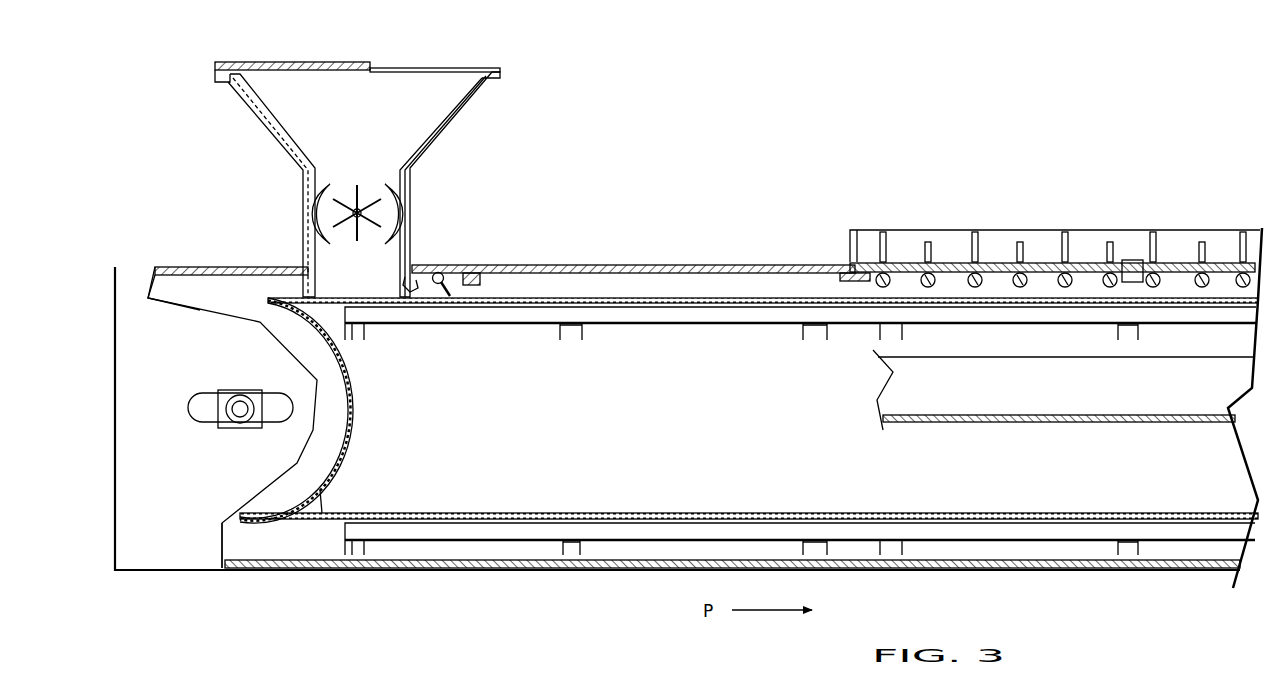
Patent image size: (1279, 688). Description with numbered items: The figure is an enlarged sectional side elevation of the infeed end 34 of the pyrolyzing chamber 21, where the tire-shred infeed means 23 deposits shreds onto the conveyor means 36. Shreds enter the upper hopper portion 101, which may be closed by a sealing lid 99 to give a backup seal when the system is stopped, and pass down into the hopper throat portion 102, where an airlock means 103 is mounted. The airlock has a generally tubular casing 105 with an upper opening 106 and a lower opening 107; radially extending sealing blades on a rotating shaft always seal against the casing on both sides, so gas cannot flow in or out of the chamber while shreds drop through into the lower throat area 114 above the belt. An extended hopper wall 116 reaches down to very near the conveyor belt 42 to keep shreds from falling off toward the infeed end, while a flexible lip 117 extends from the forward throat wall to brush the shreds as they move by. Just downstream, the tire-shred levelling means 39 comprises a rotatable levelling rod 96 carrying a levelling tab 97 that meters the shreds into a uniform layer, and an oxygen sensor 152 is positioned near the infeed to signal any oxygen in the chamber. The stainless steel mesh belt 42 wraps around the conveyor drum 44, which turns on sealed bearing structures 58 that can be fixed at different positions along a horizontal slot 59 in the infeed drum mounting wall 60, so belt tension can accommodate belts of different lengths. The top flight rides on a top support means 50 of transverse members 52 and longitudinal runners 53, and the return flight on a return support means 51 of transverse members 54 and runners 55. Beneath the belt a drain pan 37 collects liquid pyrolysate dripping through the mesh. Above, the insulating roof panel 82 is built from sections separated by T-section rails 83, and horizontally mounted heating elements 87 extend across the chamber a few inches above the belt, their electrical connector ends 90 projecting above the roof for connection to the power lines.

The pyrolyzing chamber 21 is at (640, 267).
The tire-shred infeed means 23 is at (399, 163).
The infeed end 34 is at (178, 212).
The conveyor means 36 is at (318, 545).
The drain pan 37 is at (1041, 400).
The tire-shred levelling means 39 is at (479, 271).
The conveyor belt 42 is at (695, 300).
The conveyor drum 44 is at (320, 490).
The top support means 50 is at (749, 377).
The return support means 51 is at (643, 550).
The transverse members 52 is at (580, 330).
The longitudinal runners 53 is at (748, 315).
The transverse members 54 is at (563, 543).
The runners 55 is at (518, 533).
The sealed bearing structures 58 is at (245, 400).
The horizontal slot 59 is at (207, 407).
The infeed drum mounting wall 60 is at (171, 549).
The roof panel 82 is at (1172, 262).
The T-section rails 83 is at (1130, 260).
The heating elements 87 is at (900, 265).
The electrical connector ends 90 is at (973, 260).
The levelling rod 96 is at (437, 276).
The levelling tab 97 is at (447, 290).
The sealing lid 99 is at (275, 64).
The upper hopper portion 101 is at (268, 124).
The hopper throat portion 102 is at (254, 179).
The airlock means 103 is at (413, 207).
The tubular casing 105 is at (305, 212).
The upper opening 106 is at (346, 183).
The lower opening 107 is at (345, 243).
The lower throat area 114 is at (333, 277).
The extended hopper wall 116 is at (305, 283).
The lip 117 is at (405, 283).
The oxygen sensors 152 is at (478, 272).